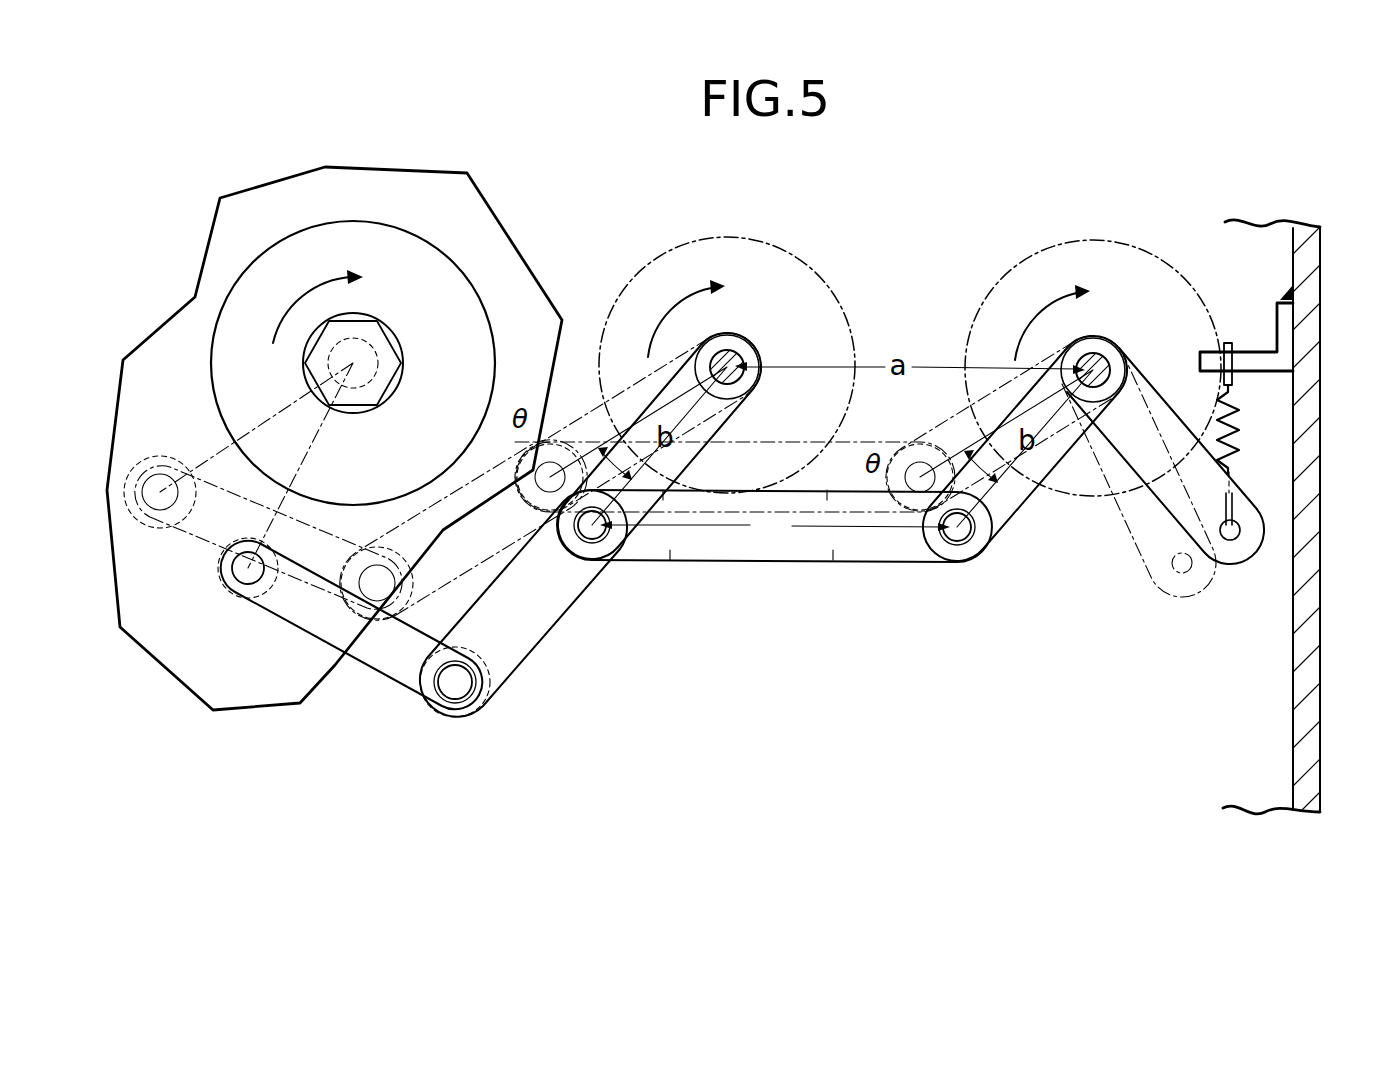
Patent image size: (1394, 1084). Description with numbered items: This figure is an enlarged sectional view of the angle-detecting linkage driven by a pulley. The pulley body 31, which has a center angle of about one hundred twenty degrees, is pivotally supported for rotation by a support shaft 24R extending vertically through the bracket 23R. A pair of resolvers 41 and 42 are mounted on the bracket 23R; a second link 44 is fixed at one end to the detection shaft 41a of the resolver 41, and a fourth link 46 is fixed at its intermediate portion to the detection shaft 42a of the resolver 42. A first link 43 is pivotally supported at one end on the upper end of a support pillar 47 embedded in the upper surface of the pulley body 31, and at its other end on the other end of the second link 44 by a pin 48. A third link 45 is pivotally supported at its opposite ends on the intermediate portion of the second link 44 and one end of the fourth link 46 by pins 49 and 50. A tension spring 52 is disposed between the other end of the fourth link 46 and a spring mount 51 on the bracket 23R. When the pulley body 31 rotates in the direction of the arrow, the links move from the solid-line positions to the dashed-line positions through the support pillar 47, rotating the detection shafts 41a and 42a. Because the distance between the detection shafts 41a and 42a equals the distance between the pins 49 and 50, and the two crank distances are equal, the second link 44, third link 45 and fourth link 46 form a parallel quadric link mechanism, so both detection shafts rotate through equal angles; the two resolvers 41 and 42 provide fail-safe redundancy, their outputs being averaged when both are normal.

The pulley body 31 is at (230, 236).
The support shaft 24R is at (368, 356).
The resolver 41 is at (780, 240).
The detection shaft 41a is at (730, 360).
The resolver 42 is at (1090, 240).
The detection shaft 42a is at (1097, 358).
The first link 43 is at (370, 665).
The second link 44 is at (563, 590).
The third link 45 is at (795, 555).
The fourth link 46 is at (1050, 467).
The support pillar 47 is at (245, 570).
The pin 48 is at (457, 688).
The pin 49 is at (597, 535).
The pin 50 is at (965, 540).
The spring mount 51 is at (1258, 355).
The tension spring 52 is at (1210, 400).
The bracket 23R is at (1307, 673).